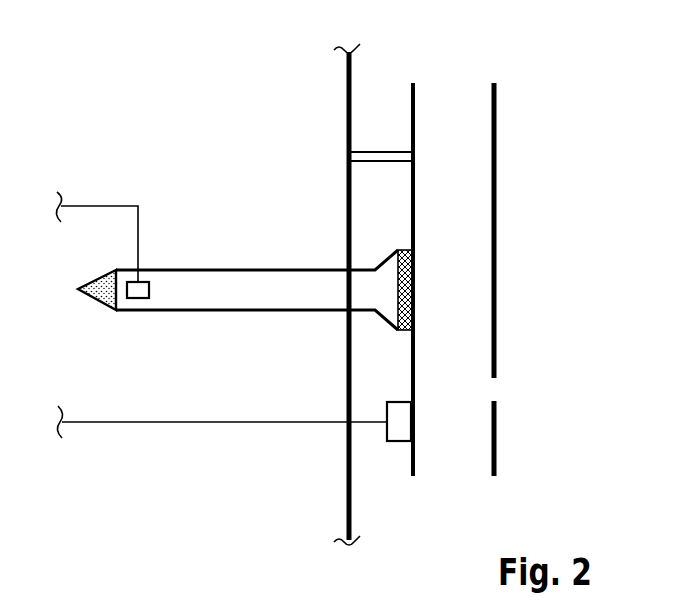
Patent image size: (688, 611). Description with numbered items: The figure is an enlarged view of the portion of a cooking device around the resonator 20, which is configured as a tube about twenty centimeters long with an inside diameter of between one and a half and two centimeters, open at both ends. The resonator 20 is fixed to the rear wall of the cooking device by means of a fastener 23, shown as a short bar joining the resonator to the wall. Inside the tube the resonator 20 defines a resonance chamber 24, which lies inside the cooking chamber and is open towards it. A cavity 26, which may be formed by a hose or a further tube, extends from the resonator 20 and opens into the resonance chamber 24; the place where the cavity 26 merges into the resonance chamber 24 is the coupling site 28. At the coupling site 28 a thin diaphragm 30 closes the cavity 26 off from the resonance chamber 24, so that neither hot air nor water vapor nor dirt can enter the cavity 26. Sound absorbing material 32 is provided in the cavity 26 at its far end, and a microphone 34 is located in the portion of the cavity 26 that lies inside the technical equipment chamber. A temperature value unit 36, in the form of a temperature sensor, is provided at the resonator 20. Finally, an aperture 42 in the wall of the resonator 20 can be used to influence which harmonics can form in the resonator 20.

The resonator 20 is at (497, 196).
The fastener 23 is at (373, 159).
The resonance chamber 24 is at (453, 104).
The cavity 26 is at (245, 280).
The coupling site 28 is at (440, 263).
The diaphragm 30 is at (416, 282).
The sound absorbing material 32 is at (93, 302).
The microphone 34 is at (145, 280).
The temperature value unit 36 is at (396, 413).
The aperture 42 is at (499, 387).